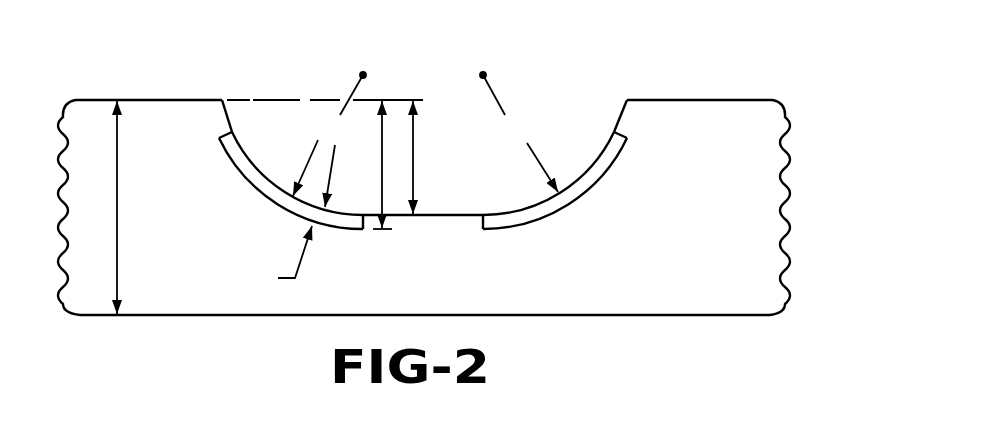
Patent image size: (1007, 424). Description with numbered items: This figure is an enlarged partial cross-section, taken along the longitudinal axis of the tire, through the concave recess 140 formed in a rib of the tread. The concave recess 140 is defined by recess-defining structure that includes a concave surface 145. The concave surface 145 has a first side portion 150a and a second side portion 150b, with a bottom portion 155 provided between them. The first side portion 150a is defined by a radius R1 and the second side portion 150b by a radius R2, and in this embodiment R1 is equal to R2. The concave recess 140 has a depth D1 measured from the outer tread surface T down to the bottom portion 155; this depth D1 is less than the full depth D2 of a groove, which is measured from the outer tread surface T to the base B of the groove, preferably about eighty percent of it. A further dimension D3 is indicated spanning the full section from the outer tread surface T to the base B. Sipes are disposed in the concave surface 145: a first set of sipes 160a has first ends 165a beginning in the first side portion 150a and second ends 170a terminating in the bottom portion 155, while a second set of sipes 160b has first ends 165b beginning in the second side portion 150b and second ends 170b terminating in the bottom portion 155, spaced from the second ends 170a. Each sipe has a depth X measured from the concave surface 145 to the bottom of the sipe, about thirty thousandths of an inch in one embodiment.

The concave recess 140 is at (453, 72).
The concave surface 145 is at (228, 118).
The first side portion 150a is at (270, 168).
The second side portion 150b is at (580, 165).
The bottom portion 155 is at (463, 213).
The first set of sipes 160a is at (252, 184).
The second set of sipes 160b is at (582, 194).
The first ends of first set of sipes 165a is at (221, 137).
The first ends of second set of sipes 165b is at (623, 135).
The second ends of first set of sipes 170a is at (363, 229).
The second ends of second set of sipes 170b is at (483, 229).
The outer tread surface T is at (168, 100).
The base of the groove B is at (170, 315).
The sipe depth X is at (283, 259).
The depth of the concave recess D1 is at (413, 157).
The full depth of the groove D2 is at (380, 165).
The substrate thickness D3 is at (116, 207).
The radius of first side portion R1 is at (329, 139).
The radius of second side portion R2 is at (519, 132).